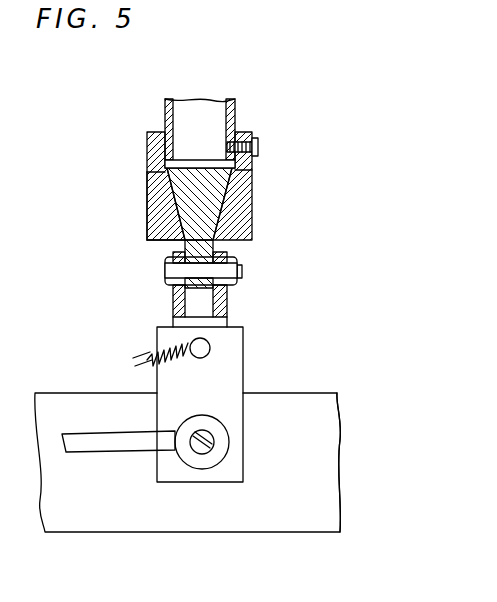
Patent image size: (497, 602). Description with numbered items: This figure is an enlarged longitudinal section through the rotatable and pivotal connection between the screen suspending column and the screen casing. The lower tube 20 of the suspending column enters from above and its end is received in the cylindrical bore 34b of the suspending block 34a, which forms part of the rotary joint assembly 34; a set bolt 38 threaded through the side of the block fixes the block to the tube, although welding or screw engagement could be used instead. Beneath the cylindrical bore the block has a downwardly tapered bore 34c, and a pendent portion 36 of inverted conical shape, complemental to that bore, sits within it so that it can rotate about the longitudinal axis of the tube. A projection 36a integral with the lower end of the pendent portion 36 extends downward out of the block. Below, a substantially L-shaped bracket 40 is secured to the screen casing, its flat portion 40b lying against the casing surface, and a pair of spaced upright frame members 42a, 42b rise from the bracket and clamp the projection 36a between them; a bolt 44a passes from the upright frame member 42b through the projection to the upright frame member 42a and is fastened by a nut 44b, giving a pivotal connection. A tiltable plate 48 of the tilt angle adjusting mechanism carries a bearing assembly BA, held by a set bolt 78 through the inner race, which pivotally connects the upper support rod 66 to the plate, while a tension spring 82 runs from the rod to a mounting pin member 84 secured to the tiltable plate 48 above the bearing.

The lower tube 20 is at (165, 99).
The rotary joint assembly 34 is at (147, 142).
The suspending block 34a is at (157, 226).
The cylindrical bore 34b is at (147, 170).
The downwardly tapered bore 34c is at (153, 200).
The pendent portion 36 is at (215, 190).
The projection 36a is at (205, 246).
The set bolt 38 is at (258, 146).
The upright frame member 42a is at (228, 300).
The upright frame member 42b is at (173, 300).
The bolt 44a is at (238, 262).
The nut 44b is at (243, 279).
The tiltable plate 48 is at (228, 375).
The upper support rod 66 is at (115, 445).
The set bolt 78 is at (210, 440).
The tension spring 82 is at (152, 355).
The mounting pin member 84 is at (212, 348).
The L-shaped bracket 40 is at (160, 500).
The flat portion 40b is at (323, 438).
The bearing assembly BA is at (208, 452).